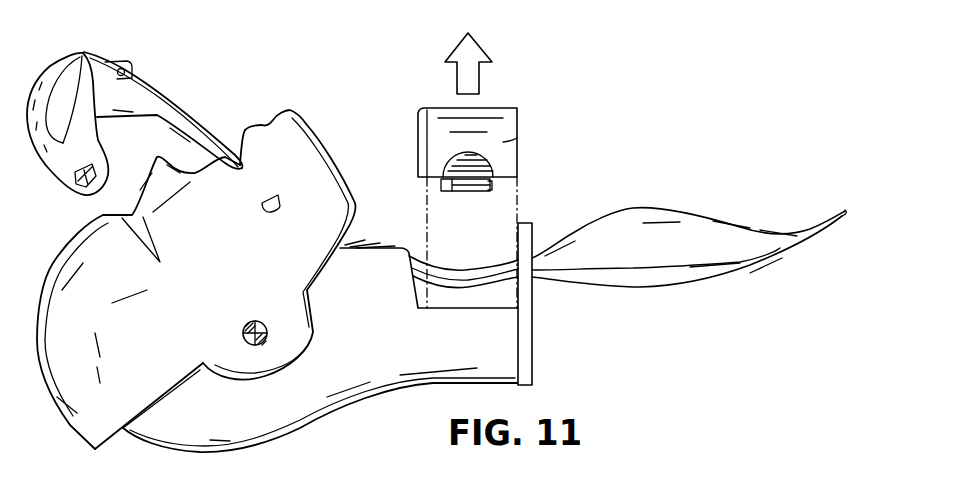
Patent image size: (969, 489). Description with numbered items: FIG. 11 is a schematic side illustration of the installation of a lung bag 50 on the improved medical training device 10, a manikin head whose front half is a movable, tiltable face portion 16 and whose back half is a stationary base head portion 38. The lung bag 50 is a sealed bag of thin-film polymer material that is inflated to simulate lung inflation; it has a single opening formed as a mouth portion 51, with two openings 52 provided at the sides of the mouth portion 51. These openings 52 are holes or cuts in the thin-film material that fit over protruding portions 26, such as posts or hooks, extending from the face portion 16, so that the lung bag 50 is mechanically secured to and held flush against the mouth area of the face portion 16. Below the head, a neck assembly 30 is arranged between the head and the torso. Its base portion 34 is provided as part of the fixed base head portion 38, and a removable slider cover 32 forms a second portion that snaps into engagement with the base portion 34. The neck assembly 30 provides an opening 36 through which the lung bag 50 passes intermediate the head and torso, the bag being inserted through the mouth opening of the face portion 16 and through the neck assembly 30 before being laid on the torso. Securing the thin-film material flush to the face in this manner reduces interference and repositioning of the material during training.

The reel assembly 10 is at (493, 47).
The face portion 16 is at (68, 363).
The protruding portions 26 is at (280, 197).
The neck assembly 30 is at (560, 176).
The slider cover 32 is at (505, 143).
The base portion 34 is at (522, 348).
The opening 36 is at (540, 240).
The base head portion 38 is at (213, 440).
The lung bag 50 is at (172, 111).
The mouth portion 51 is at (63, 78).
The openings 52 is at (86, 192).